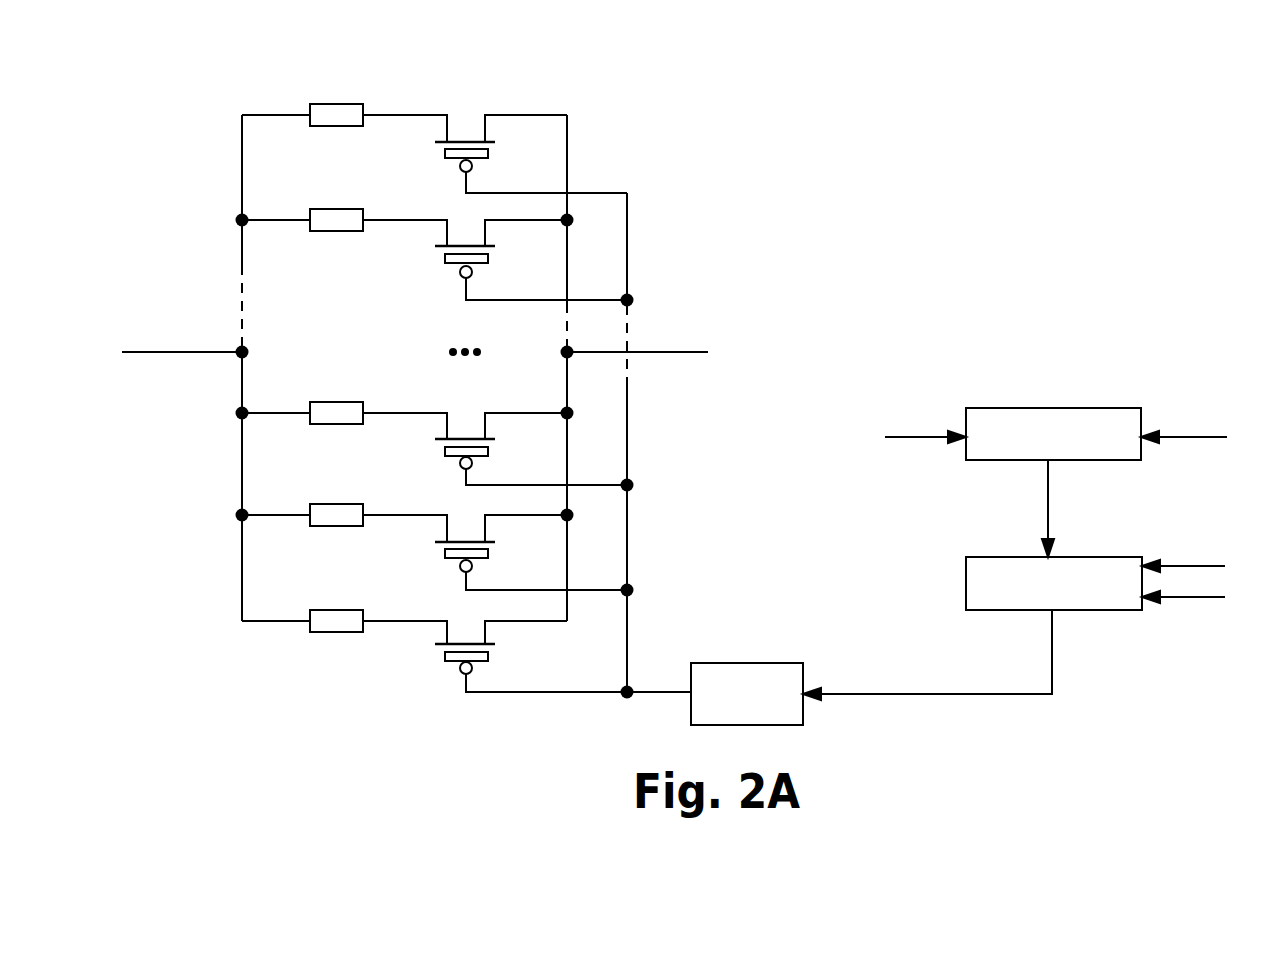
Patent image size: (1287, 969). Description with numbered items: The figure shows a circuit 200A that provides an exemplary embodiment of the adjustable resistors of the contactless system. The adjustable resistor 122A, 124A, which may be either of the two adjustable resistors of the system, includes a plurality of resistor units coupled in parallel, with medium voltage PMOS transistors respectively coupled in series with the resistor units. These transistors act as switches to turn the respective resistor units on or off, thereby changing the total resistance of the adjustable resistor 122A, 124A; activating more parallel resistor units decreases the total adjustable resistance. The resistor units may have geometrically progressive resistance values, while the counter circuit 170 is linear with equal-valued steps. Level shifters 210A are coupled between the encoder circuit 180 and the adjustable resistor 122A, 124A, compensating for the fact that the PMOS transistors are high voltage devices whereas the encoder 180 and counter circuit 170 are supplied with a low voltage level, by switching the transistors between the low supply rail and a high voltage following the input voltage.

The circuit 200A is at (992, 106).
The adjustable resistor 122A is at (586, 88).
The adjustable resistor 124A is at (415, 401).
The counter circuit 170 is at (1105, 408).
The encoder circuit 180 is at (1112, 610).
The level shifters 210A is at (748, 663).